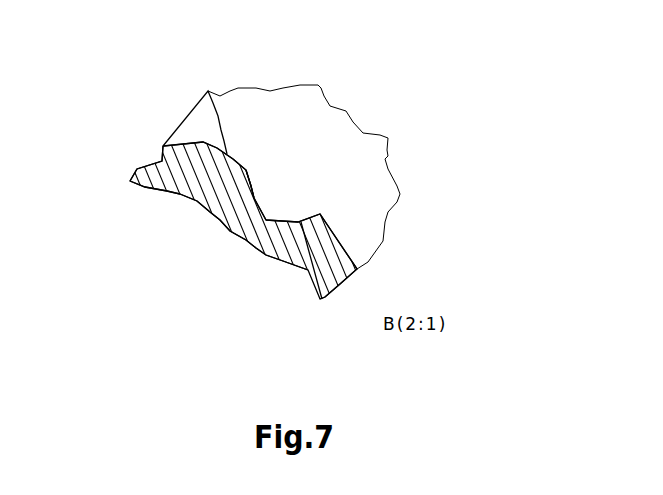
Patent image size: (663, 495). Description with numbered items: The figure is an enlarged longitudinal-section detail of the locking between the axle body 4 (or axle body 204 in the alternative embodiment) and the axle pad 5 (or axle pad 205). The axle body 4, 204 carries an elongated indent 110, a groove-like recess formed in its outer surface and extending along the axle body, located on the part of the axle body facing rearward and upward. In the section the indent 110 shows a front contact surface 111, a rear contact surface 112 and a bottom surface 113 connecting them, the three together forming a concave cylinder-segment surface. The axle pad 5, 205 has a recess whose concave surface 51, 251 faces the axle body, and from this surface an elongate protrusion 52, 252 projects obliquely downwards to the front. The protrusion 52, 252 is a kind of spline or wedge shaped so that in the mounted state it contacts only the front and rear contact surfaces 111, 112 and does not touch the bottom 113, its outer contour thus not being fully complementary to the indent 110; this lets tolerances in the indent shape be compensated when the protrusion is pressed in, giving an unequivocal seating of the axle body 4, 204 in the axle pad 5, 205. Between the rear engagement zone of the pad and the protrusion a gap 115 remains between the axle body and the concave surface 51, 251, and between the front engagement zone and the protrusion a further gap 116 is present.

The axle body 4 is at (242, 242).
The axle body 204 is at (314, 272).
The axle pad 5 is at (318, 170).
The axle pad 205 is at (310, 114).
The concave surface of the recess 51 is at (124, 204).
The concave surface of the recess 251 is at (188, 178).
The elongate protrusion 52 is at (379, 169).
The elongate protrusion 252 is at (264, 194).
The elongated indent 110 is at (248, 233).
The front contact surface 111 is at (237, 187).
The rear contact surface 112 is at (295, 264).
The bottom surface 113 is at (243, 195).
The gap 115 is at (337, 227).
The gap 116 is at (200, 83).